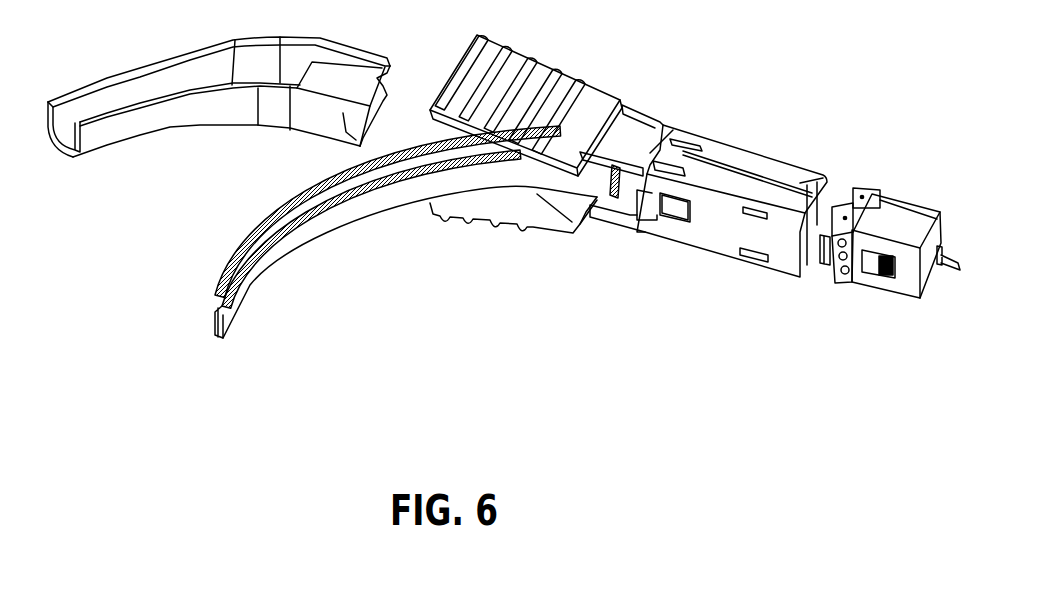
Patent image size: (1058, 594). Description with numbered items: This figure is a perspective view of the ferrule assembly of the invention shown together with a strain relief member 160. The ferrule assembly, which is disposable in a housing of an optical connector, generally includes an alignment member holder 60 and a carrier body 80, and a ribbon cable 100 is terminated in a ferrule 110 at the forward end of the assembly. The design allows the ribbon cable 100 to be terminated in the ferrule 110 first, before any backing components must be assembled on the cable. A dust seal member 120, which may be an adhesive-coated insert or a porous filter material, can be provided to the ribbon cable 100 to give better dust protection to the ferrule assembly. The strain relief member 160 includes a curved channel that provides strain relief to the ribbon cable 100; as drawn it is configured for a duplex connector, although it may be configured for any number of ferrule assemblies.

The strain relief member 160 is at (202, 116).
The ribbon cable 100 is at (270, 265).
The carrier body 80 is at (717, 242).
The dust seal member 120 is at (673, 213).
The alignment member holder 60 is at (804, 280).
The ferrule 110 is at (883, 277).